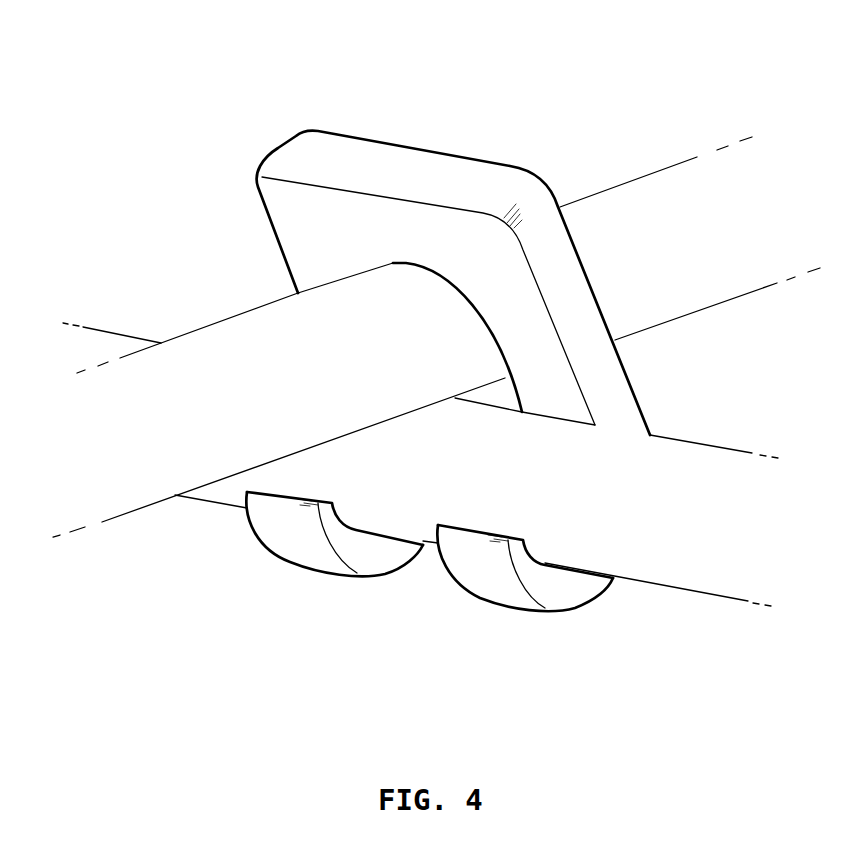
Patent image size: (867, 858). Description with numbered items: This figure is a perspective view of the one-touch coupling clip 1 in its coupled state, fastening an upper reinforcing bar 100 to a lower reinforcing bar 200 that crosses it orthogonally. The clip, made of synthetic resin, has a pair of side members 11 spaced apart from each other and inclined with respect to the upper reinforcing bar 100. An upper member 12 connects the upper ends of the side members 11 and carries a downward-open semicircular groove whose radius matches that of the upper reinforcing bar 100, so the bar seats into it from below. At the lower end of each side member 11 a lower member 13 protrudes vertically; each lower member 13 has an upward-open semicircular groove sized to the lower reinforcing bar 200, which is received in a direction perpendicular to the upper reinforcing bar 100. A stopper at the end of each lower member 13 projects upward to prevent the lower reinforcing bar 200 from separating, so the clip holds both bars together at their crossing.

The one-touch coupling clip 1 is at (453, 374).
The side member 11 is at (615, 418).
The upper member 12 is at (392, 165).
The lower member 13 is at (322, 568).
The upper reinforcing bar 100 is at (635, 178).
The lower reinforcing bar 200 is at (687, 593).